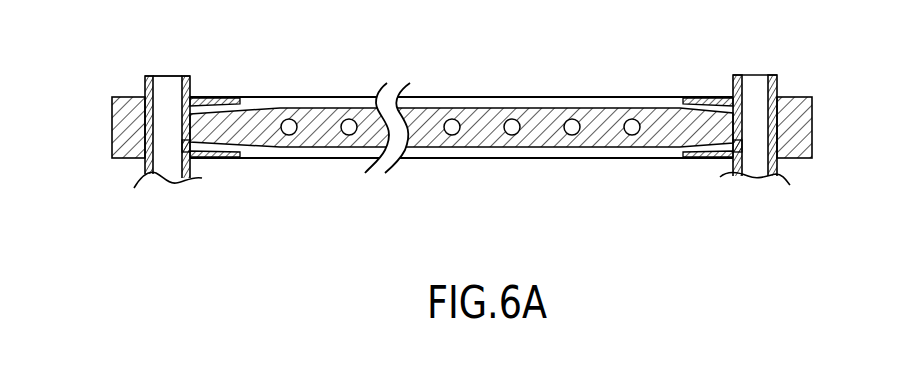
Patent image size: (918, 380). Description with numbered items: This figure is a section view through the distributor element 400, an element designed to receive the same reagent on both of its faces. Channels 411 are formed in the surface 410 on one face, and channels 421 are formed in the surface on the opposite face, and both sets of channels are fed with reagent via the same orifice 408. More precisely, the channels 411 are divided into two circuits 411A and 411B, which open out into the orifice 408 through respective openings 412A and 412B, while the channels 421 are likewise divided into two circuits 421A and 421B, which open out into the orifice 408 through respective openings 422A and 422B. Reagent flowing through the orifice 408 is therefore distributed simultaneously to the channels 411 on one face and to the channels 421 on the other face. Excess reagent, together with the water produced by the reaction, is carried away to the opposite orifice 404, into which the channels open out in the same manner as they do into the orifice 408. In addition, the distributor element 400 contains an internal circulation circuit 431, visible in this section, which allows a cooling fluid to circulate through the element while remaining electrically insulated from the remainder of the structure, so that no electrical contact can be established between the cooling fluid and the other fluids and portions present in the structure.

The distributor element 400 is at (315, 176).
The opposite orifice 404 is at (765, 108).
The orifice 408 is at (162, 125).
The surface 410 is at (110, 107).
The channels 411 is at (327, 97).
The circuit 411A is at (208, 105).
The circuit 411B is at (705, 98).
The opening 412A is at (181, 110).
The opening 412B is at (744, 106).
The channels 421 is at (458, 158).
The circuit 421A is at (208, 153).
The circuit 421B is at (701, 152).
The opening 422A is at (184, 146).
The opening 422B is at (742, 145).
The internal circulation circuit 431 is at (572, 130).